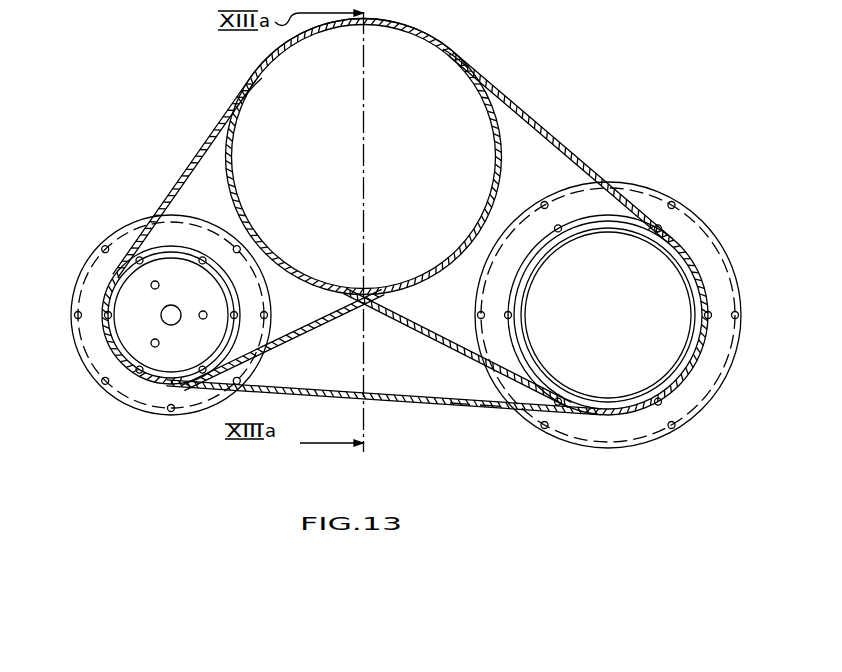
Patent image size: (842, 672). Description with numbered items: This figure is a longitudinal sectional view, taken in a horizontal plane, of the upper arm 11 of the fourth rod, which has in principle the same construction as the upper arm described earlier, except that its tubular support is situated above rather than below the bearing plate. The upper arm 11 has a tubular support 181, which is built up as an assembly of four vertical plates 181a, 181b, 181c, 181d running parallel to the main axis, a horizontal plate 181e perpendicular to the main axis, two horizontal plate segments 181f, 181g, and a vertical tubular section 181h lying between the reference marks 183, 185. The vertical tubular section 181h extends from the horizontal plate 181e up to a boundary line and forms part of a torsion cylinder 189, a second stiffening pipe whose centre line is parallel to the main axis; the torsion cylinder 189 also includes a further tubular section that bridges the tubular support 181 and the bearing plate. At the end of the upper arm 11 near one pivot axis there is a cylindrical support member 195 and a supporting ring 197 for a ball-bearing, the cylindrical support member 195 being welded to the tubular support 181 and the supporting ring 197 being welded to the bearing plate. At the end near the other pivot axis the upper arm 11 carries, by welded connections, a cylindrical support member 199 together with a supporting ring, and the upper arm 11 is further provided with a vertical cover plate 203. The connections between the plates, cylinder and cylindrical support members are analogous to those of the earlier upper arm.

The upper arm 11 is at (460, 409).
The tubular support 181 is at (519, 102).
The vertical plate 181a is at (540, 131).
The vertical plate 181b is at (200, 145).
The vertical plate 181c is at (290, 334).
The vertical plate 181d is at (447, 343).
The horizontal plate 181e is at (397, 383).
The horizontal plate segment 181f is at (435, 305).
The horizontal plate segment 181g is at (283, 294).
The vertical tubular section 181h is at (414, 30).
The reference numeral 183 is at (476, 80).
The reference numeral 185 is at (242, 100).
The torsion cylinder 189 is at (252, 222).
The cylindrical support member 195 is at (135, 375).
The supporting ring 197 is at (90, 348).
The cylindrical support member 199 is at (693, 367).
The vertical cover plate 203 is at (490, 407).